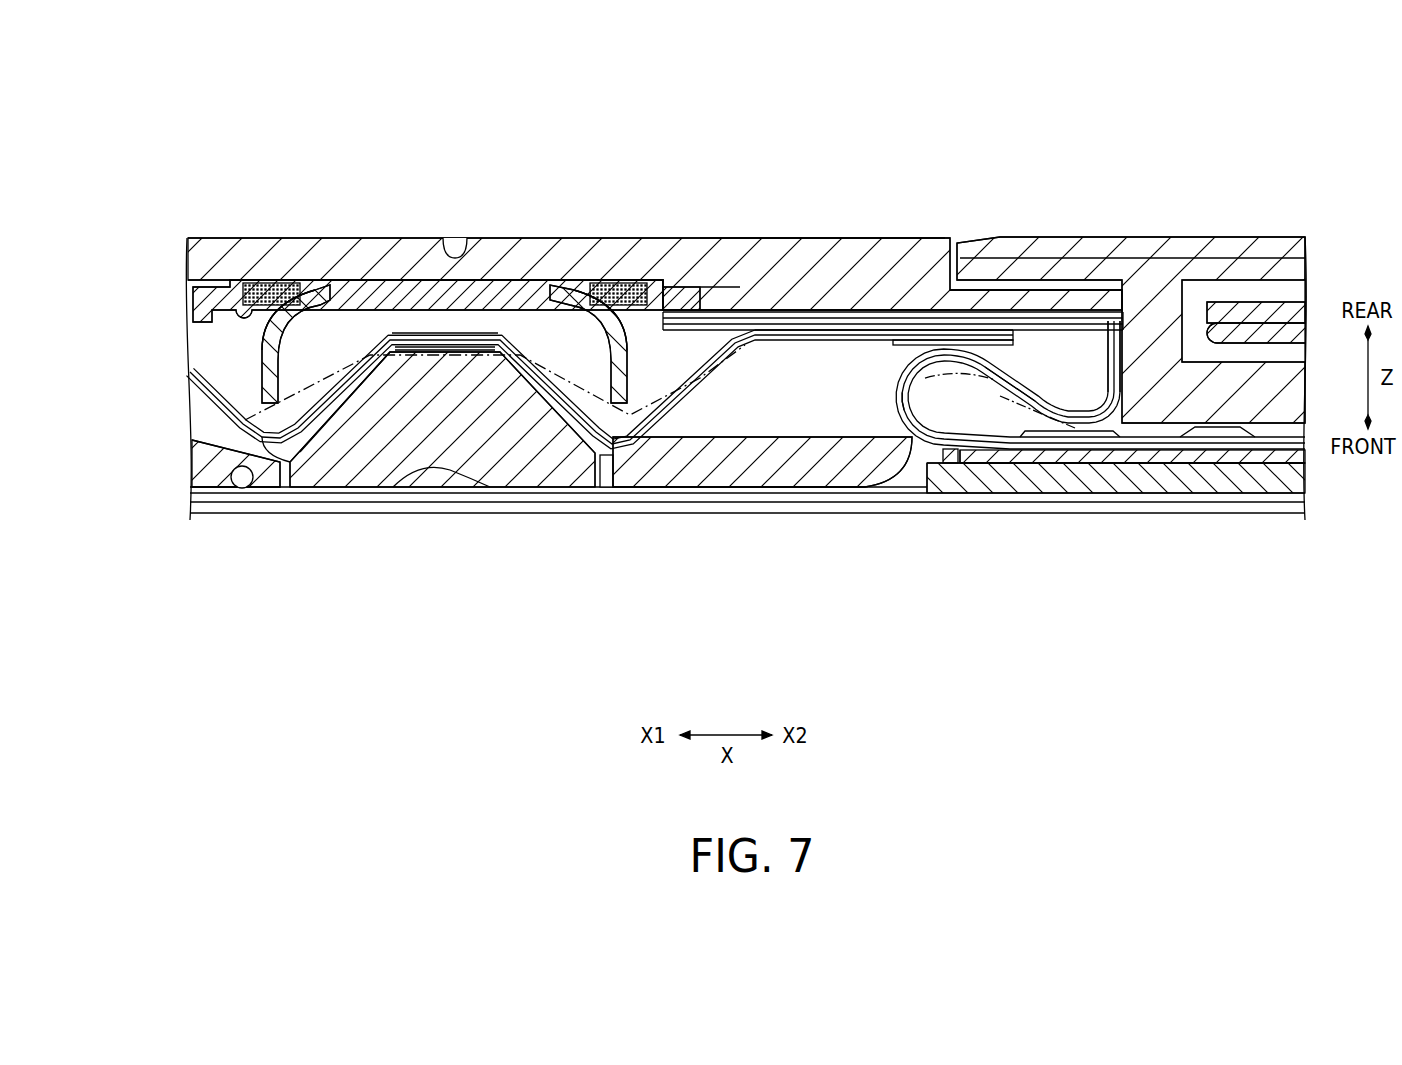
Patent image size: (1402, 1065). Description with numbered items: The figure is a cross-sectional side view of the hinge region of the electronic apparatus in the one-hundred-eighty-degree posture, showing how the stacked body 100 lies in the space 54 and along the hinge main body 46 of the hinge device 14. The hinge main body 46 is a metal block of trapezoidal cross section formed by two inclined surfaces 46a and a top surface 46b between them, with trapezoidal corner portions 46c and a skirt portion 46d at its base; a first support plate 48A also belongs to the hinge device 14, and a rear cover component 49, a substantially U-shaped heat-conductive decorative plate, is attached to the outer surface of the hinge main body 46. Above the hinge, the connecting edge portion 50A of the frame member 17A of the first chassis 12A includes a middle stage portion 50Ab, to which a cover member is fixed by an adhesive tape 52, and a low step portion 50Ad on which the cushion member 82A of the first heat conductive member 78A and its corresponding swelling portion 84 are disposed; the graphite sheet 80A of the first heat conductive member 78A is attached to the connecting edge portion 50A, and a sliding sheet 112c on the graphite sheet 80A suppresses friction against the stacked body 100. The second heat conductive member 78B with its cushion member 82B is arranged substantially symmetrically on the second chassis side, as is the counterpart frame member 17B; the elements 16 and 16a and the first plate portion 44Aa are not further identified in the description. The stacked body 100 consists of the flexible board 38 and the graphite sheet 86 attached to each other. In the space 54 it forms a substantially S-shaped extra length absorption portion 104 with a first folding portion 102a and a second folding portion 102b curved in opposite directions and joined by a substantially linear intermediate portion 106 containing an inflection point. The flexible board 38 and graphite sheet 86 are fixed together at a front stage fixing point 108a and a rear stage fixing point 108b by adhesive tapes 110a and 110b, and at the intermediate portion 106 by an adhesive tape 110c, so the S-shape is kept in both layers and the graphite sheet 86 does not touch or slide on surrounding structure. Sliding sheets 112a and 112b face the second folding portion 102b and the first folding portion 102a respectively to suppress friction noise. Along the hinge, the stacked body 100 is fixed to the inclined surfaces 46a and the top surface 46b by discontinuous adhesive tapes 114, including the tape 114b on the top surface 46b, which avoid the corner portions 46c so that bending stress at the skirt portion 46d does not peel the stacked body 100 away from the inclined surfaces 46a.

The first chassis 12A is at (1140, 198).
The hinge device 14 is at (445, 552).
The lower body 16 is at (495, 507).
The hole 16a is at (250, 486).
The frame member 17A is at (878, 165).
The second connector 17B is at (232, 115).
The flexible board 38 is at (860, 335).
The bottom plate 44Aa is at (1173, 494).
The hinge main body 46 is at (394, 447).
The inclined surface 46a is at (300, 340).
The top surface 46b is at (375, 348).
The trapezoidal corner portion 46c is at (338, 318).
The skirt portion 46d is at (267, 450).
The first support plate 48A is at (793, 470).
The rear cover component 49 is at (412, 335).
The connecting edge portion 50A is at (762, 245).
The middle stage portion 50Ab is at (1015, 283).
The low step portion 50Ad is at (708, 312).
The adhesive tape 52 is at (1110, 280).
The space 54 is at (967, 410).
The first heat conductive member 78A is at (640, 312).
The second heat conductive member 78B is at (240, 285).
The graphite sheet 80A is at (706, 300).
The cushion member 82A is at (640, 287).
The cushion member 82B is at (268, 290).
The swelling portion 84 is at (451, 360).
The graphite sheet 86 is at (820, 328).
The stacked body 100 is at (890, 646).
The first folding portion 102a is at (1135, 255).
The second folding portion 102b is at (893, 397).
The extra length absorption portion 104 is at (949, 465).
The intermediate portion 106 is at (1070, 324).
The front stage fixing point 108a is at (1048, 313).
The rear stage fixing point 108b is at (465, 338).
The adhesive tape 110a is at (1228, 450).
The adhesive tape 110b is at (440, 330).
The adhesive tape 110c is at (1013, 399).
The sliding sheet 112a is at (1043, 437).
The sliding sheet 112b is at (913, 338).
The sliding sheet 112c is at (862, 330).
The adhesive tape 114 is at (616, 420).
The adhesive tape 114b is at (485, 345).